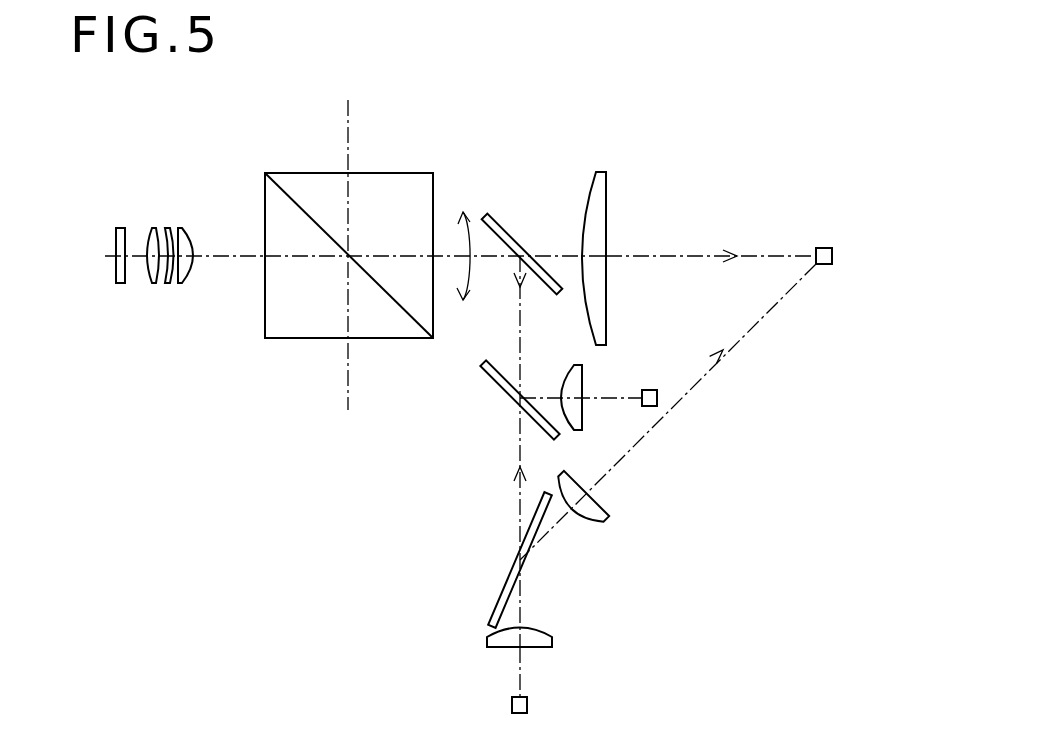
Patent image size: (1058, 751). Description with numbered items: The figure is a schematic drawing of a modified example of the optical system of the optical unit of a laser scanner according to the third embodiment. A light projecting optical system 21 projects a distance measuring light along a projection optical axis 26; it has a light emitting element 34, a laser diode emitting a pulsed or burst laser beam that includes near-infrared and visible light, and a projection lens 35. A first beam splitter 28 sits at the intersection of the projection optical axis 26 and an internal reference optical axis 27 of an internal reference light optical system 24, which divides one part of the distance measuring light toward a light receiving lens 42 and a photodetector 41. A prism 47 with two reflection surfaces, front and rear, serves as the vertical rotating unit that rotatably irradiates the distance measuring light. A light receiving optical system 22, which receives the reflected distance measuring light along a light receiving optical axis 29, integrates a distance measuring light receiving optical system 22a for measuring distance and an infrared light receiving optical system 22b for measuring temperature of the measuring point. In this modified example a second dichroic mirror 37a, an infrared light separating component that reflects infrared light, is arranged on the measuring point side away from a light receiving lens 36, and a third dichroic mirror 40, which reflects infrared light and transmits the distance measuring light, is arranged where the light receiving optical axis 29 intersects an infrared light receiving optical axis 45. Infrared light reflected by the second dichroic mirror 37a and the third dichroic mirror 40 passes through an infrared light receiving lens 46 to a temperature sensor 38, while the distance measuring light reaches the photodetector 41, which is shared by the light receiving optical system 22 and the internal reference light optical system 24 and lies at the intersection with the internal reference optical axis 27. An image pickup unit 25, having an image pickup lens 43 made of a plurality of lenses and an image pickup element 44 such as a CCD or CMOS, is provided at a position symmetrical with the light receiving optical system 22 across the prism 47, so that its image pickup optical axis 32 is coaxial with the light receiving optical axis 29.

The light projecting optical system 21 is at (490, 666).
The light receiving optical system 22 is at (558, 225).
The distance measuring light receiving optical system 22a is at (773, 240).
The infrared light receiving optical system 22b is at (628, 407).
The internal reference light optical system 24 is at (763, 335).
The image pickup unit 25 is at (141, 294).
The projection optical axis 26 is at (521, 677).
The internal reference optical axis 27 is at (707, 368).
The first beam splitter 28 is at (500, 578).
The light receiving optical axis 29 is at (702, 255).
The image pickup optical axis 32 is at (218, 254).
The light emitting element 34 is at (528, 705).
The projection lens 35 is at (540, 627).
The light receiving lens 36 is at (605, 210).
The second dichroic mirror 37a is at (510, 223).
The temperature sensor 38 is at (650, 390).
The third dichroic mirror 40 is at (490, 383).
The photodetector 41 is at (827, 248).
The light receiving lens 42 is at (612, 500).
The image pickup lens 43 is at (172, 226).
The image pickup element 44 is at (115, 243).
The infrared light receiving optical axis 45 is at (608, 395).
The infrared light receiving lens 46 is at (567, 368).
The prism 47 is at (388, 173).